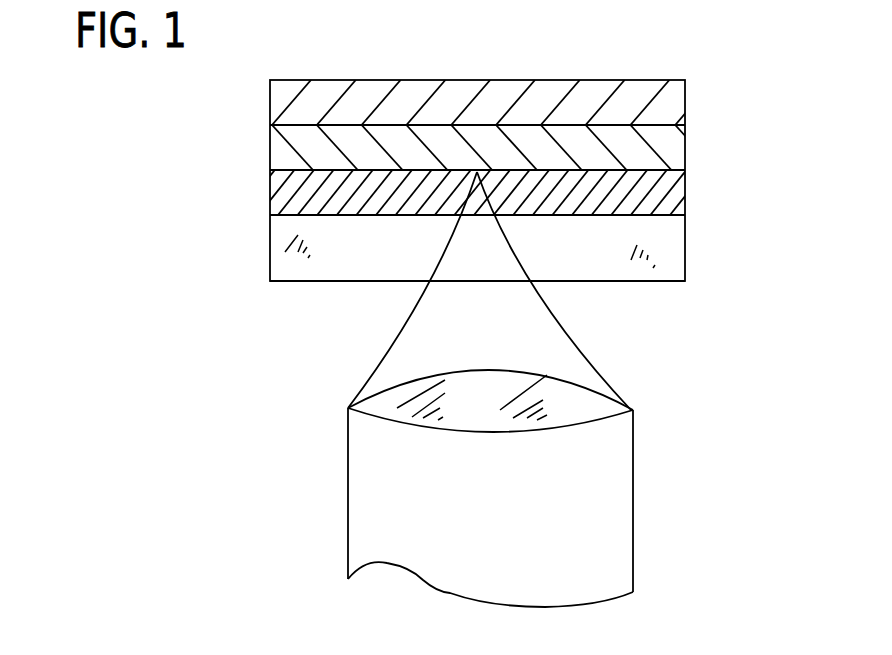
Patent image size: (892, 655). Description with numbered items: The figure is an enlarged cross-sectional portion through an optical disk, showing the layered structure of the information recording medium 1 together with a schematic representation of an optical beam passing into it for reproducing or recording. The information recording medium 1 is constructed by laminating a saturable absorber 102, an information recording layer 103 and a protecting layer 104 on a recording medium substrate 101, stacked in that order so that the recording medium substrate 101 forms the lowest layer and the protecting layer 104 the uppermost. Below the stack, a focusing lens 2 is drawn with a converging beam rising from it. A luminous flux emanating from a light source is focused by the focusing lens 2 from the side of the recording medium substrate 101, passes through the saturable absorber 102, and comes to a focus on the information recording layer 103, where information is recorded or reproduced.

The information recording medium 1 is at (763, 68).
The focusing lens 2 is at (547, 418).
The recording medium substrate 101 is at (680, 258).
The saturable absorber 102 is at (680, 203).
The information recording layer 103 is at (677, 153).
The protecting layer 104 is at (677, 107).